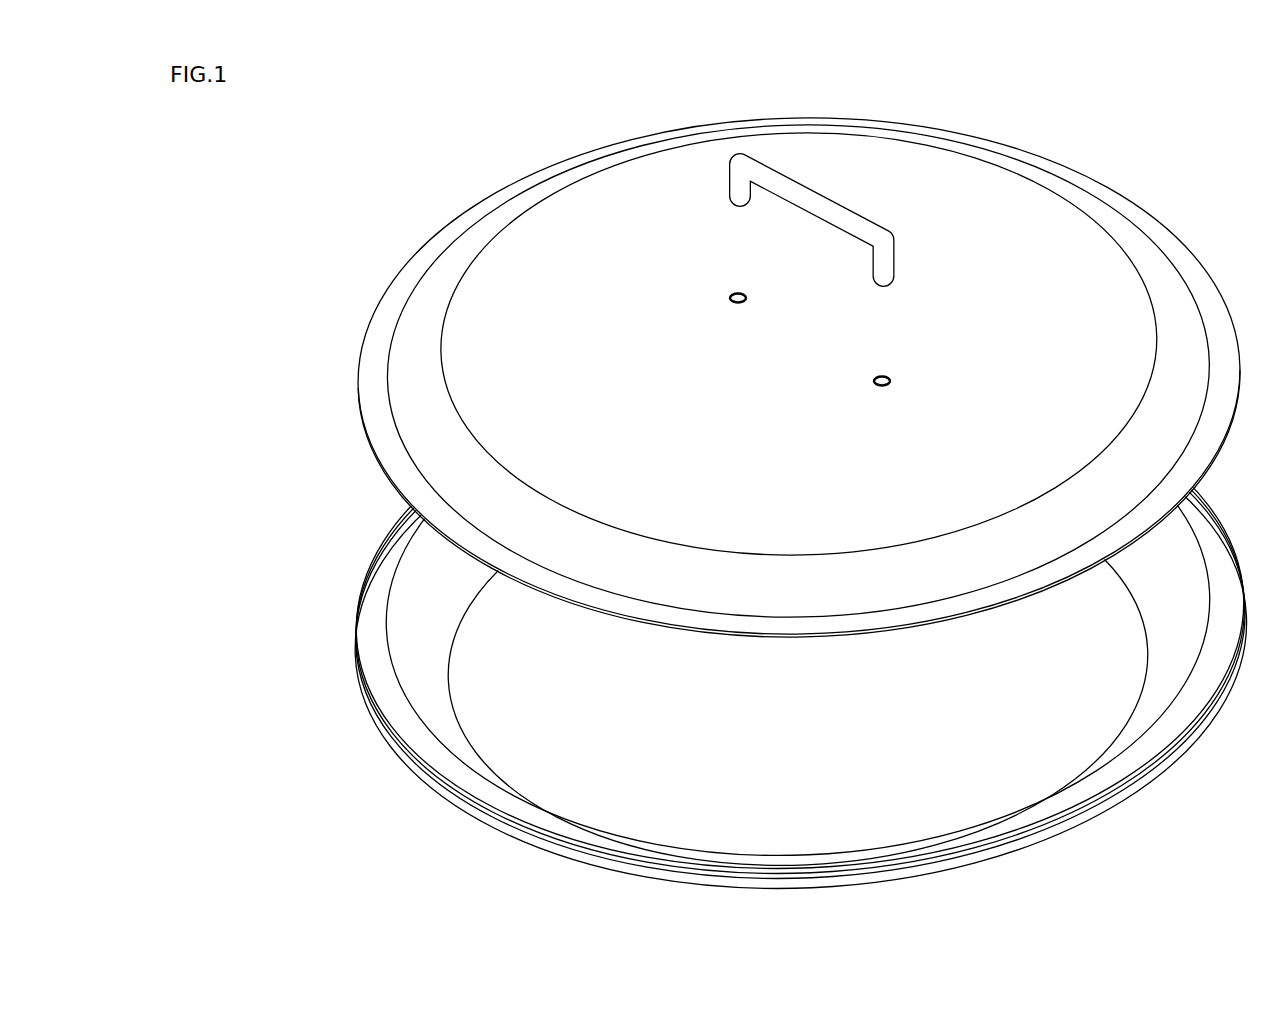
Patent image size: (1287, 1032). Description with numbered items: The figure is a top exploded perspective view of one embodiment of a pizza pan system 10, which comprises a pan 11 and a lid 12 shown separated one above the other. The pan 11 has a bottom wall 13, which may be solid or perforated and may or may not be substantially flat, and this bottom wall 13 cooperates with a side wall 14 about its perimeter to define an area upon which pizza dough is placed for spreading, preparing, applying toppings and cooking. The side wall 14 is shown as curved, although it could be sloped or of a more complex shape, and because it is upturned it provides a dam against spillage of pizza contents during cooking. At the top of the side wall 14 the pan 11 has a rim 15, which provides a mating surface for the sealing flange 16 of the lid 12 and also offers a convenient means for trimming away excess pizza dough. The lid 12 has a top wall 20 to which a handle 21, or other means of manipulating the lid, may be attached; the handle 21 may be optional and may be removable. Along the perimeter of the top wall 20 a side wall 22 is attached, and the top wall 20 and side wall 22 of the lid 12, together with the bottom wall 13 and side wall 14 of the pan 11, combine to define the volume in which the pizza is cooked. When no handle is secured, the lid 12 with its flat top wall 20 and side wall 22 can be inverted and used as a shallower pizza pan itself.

The pizza pan system 10 is at (773, 490).
The pan 11 is at (433, 807).
The lid 12 is at (405, 208).
The bottom wall 13 is at (567, 782).
The side wall 14 is at (417, 612).
The rim 15 is at (362, 678).
The sealing flange 16 is at (368, 440).
The top wall 20 is at (963, 163).
The handle 21 is at (811, 183).
The side wall 22 is at (400, 370).